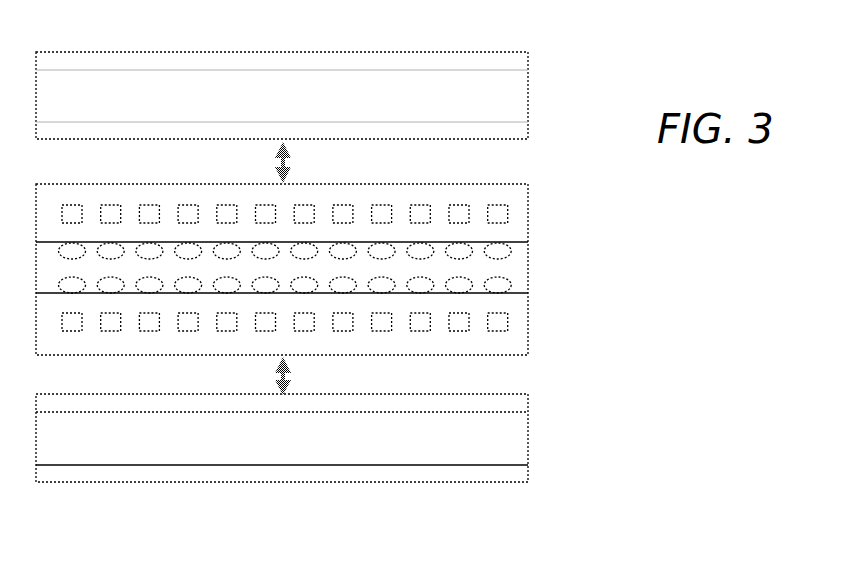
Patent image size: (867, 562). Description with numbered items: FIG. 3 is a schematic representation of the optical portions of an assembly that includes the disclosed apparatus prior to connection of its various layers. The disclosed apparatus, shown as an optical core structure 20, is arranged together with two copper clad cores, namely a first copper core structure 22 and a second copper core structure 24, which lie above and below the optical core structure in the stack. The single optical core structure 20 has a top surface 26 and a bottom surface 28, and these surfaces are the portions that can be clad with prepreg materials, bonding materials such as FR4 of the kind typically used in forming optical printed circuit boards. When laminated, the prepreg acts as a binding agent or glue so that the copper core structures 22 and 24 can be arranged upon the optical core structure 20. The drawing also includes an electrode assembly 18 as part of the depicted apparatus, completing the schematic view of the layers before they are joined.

The electrode assembly 18 is at (670, 311).
The optical core structure 20 is at (528, 280).
The copper core structure 22 is at (528, 87).
The copper core structure 24 is at (528, 438).
The top surface 26 is at (72, 183).
The bottom surface 28 is at (90, 358).